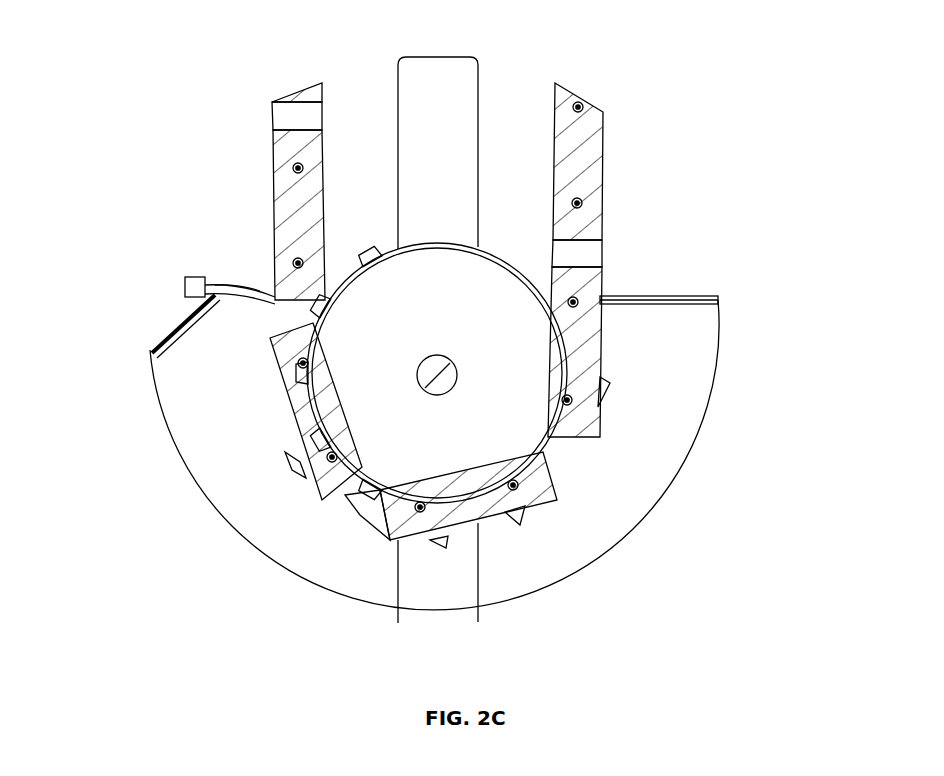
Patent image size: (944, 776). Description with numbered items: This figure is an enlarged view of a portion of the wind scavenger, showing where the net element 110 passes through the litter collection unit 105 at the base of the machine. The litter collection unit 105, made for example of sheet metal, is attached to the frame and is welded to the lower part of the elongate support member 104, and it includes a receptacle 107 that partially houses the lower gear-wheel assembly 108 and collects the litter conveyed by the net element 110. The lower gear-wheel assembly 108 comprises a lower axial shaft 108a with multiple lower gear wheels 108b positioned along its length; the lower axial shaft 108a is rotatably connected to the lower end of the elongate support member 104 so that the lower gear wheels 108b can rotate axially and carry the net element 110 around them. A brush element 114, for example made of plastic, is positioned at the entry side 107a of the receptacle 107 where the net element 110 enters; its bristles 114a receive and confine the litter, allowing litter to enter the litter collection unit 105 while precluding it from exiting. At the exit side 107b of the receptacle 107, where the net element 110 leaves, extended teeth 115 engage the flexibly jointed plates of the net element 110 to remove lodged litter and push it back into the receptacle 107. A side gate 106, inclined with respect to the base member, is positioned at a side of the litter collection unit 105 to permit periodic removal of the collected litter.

The elongate support member 104 is at (472, 72).
The litter collection unit 105 is at (702, 443).
The side gate 106 is at (168, 335).
The receptacle 107 is at (222, 427).
The entry side 107a is at (218, 297).
The exit side 107b is at (682, 331).
The lower gear-wheel assembly 108 is at (569, 373).
The lower axial shaft 108a is at (462, 375).
The lower gear wheel 108b is at (382, 264).
The net element 110 is at (679, 175).
The brush element 114 is at (203, 287).
The bristles 114a is at (147, 248).
The extended teeth 115 is at (628, 297).